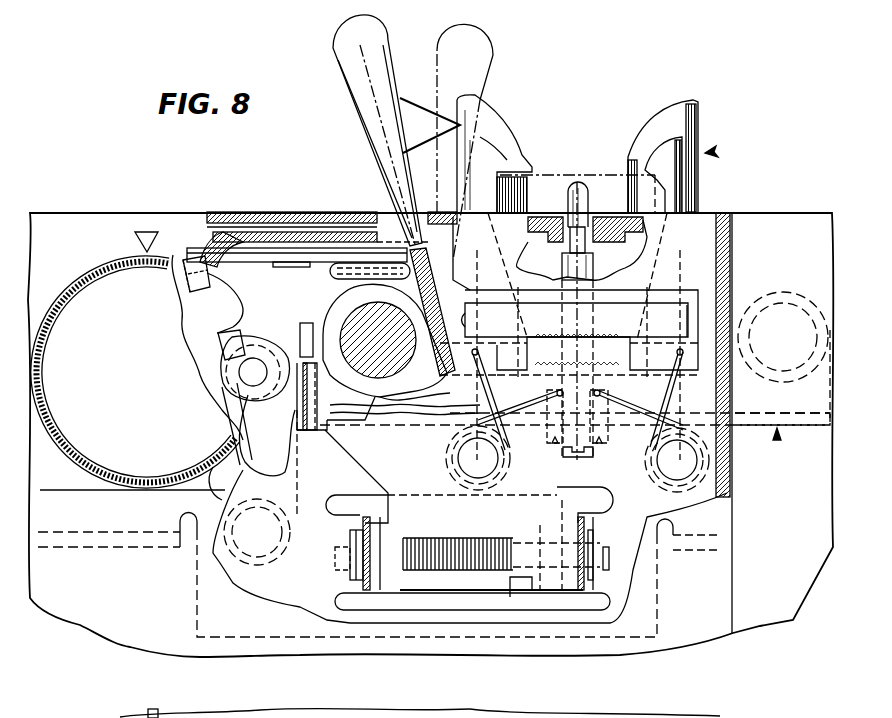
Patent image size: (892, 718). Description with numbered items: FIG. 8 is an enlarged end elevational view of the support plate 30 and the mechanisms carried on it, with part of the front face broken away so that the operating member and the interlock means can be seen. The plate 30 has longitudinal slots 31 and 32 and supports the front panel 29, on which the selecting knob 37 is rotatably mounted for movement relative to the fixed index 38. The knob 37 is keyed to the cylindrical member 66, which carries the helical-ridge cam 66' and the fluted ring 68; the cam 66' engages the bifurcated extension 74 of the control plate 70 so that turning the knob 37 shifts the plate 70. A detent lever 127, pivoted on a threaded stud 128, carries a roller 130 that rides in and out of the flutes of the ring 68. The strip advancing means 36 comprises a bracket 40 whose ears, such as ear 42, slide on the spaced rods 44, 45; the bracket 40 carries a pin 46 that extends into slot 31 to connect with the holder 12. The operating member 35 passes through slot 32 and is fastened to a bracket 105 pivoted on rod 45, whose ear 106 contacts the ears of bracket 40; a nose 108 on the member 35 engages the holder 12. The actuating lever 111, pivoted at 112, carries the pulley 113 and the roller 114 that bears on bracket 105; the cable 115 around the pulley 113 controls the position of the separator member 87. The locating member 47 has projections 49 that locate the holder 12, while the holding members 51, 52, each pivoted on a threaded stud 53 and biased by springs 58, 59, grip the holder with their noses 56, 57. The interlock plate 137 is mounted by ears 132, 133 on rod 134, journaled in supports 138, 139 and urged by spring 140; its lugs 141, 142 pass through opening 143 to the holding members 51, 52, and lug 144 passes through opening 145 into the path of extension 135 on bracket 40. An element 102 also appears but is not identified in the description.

The panel 29 is at (78, 212).
The fixed index 38 is at (147, 232).
The selecting knob 37 is at (82, 272).
The plate 30 is at (280, 212).
The plate 70 is at (312, 232).
The bifurcated extension 74 is at (207, 240).
The lever 111 is at (240, 227).
The pivot 112 is at (283, 267).
The pulley 113 is at (340, 272).
The cable 115 is at (352, 280).
The operating member 35 is at (365, 22).
The slot 32 is at (395, 245).
The roller 114 is at (377, 242).
The nose 108 is at (408, 112).
The projections 49 is at (493, 120).
The nose 57 is at (490, 153).
The nose 56 is at (655, 160).
The locating member 47 is at (714, 151).
The holder 12 is at (557, 185).
The pin 46 is at (580, 190).
The slot 31 is at (585, 182).
The holding member 52 is at (497, 270).
The holding member 51 is at (665, 282).
The lug 141 is at (690, 305).
The lug 142 is at (470, 321).
The spring 59 is at (490, 405).
The spring 58 is at (670, 400).
The opening 143 is at (730, 380).
The threaded stud 53 is at (505, 460).
The ear 42 is at (757, 292).
The rod 44 is at (793, 305).
The bracket 40 is at (742, 428).
The strip advancing means 36 is at (777, 438).
The cylindrical member 66 is at (171, 285).
The helical-ridge cam 66' is at (161, 279).
The extension 135 is at (209, 347).
The fluted ring 68 is at (223, 345).
The roller 130 is at (238, 368).
The opening 145 is at (232, 402).
The lever 127 is at (247, 433).
The rod 45 is at (345, 325).
The lug 144 is at (310, 432).
The ear 106 is at (365, 398).
The bracket 105 is at (400, 398).
The plate 137 is at (380, 466).
The threaded stud 128 is at (262, 538).
The support 139 is at (352, 532).
The ear 133 is at (347, 582).
The spring 140 is at (482, 530).
The rod 134 is at (540, 548).
The support 138 is at (586, 525).
The ear 132 is at (620, 586).
The base 102 is at (165, 712).
The member 87 is at (532, 716).